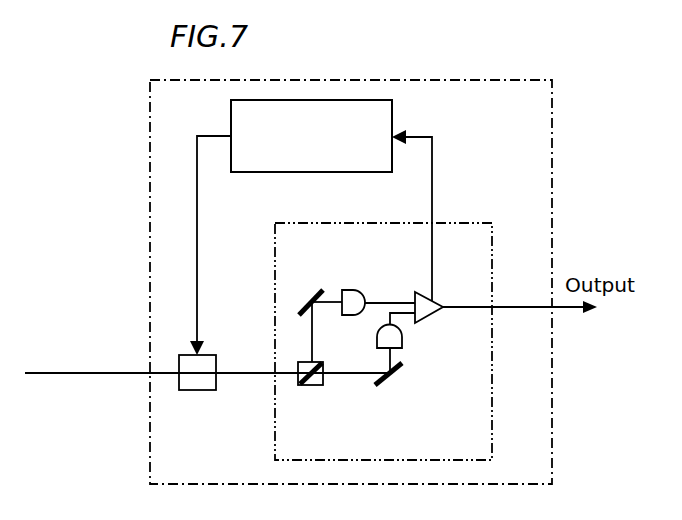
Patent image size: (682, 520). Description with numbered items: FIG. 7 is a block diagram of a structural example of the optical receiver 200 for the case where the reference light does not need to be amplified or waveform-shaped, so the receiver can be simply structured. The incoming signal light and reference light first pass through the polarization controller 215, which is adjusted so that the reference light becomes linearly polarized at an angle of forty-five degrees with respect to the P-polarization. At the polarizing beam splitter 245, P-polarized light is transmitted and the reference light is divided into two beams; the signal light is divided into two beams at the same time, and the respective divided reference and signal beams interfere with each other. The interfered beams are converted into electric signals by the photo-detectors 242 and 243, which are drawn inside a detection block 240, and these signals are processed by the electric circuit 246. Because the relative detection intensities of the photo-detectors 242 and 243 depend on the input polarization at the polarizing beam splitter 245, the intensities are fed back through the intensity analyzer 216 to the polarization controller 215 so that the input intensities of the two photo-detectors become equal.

The optical receiver 200 is at (517, 131).
The polarization controller 215 is at (208, 357).
The intensity analyzer 216 is at (260, 158).
The detection unit 240 is at (448, 228).
The photo-detector 242 is at (353, 288).
The photo-detector 243 is at (398, 342).
The polarizing beam splitter 245 is at (318, 388).
The electric circuit 246 is at (440, 300).